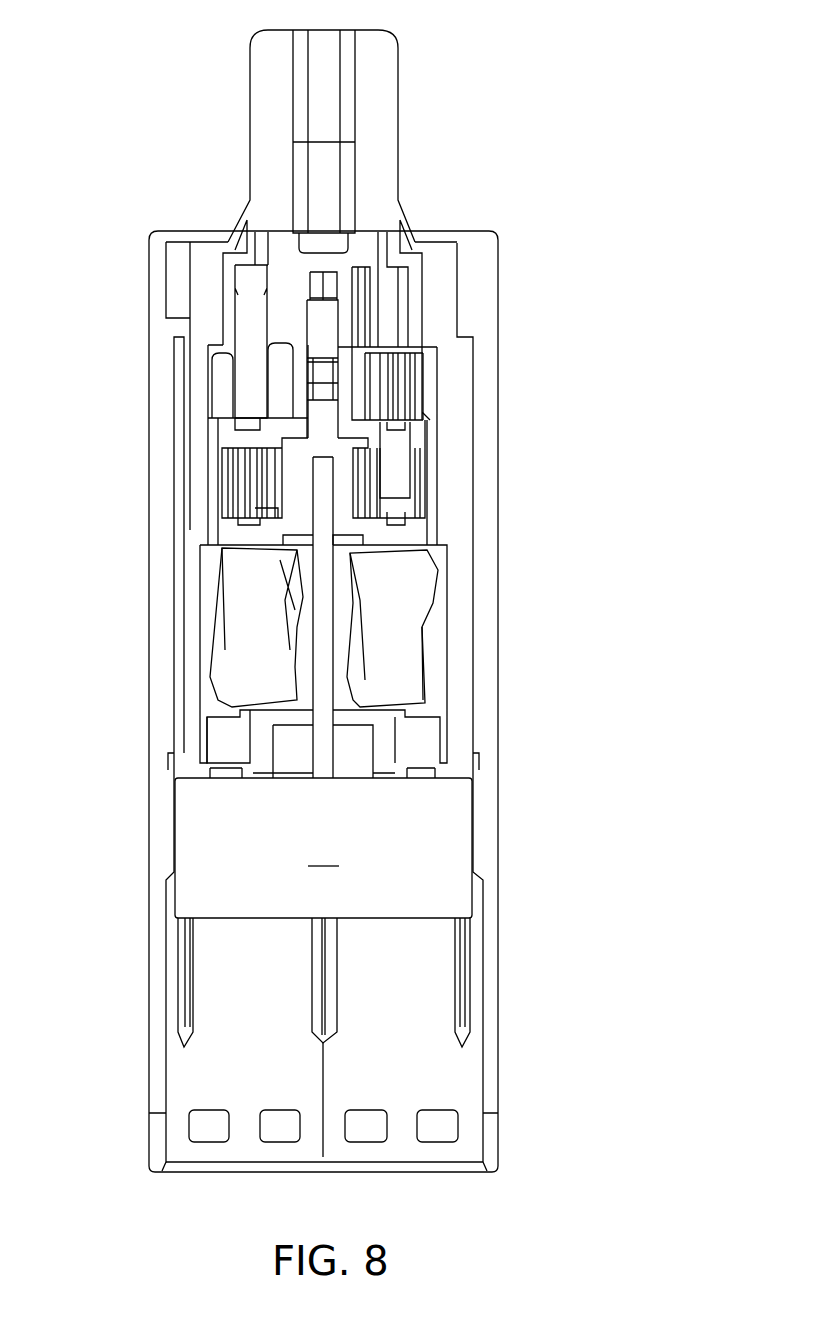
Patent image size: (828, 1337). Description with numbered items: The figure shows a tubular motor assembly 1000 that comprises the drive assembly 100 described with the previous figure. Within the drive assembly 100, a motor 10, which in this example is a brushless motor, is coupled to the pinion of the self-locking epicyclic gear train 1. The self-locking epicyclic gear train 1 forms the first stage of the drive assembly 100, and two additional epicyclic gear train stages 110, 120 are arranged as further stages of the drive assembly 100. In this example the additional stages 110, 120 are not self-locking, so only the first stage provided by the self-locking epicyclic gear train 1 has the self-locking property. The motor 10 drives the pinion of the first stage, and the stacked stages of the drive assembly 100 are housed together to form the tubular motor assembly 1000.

The tubular motor assembly 1000 is at (555, 962).
The drive assembly 100 is at (512, 367).
The self-locking epicyclic gear train 1 is at (326, 656).
The motor 10 is at (323, 848).
The additional epicyclic gear train stage 120 is at (205, 381).
The additional epicyclic gear train stage 110 is at (205, 482).